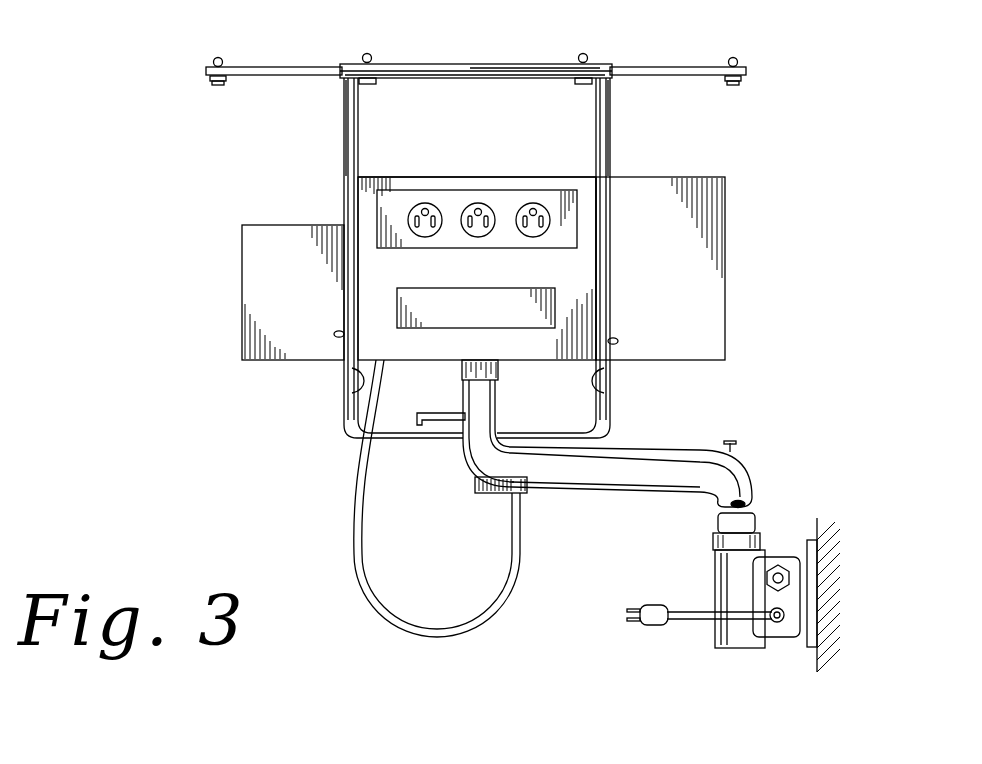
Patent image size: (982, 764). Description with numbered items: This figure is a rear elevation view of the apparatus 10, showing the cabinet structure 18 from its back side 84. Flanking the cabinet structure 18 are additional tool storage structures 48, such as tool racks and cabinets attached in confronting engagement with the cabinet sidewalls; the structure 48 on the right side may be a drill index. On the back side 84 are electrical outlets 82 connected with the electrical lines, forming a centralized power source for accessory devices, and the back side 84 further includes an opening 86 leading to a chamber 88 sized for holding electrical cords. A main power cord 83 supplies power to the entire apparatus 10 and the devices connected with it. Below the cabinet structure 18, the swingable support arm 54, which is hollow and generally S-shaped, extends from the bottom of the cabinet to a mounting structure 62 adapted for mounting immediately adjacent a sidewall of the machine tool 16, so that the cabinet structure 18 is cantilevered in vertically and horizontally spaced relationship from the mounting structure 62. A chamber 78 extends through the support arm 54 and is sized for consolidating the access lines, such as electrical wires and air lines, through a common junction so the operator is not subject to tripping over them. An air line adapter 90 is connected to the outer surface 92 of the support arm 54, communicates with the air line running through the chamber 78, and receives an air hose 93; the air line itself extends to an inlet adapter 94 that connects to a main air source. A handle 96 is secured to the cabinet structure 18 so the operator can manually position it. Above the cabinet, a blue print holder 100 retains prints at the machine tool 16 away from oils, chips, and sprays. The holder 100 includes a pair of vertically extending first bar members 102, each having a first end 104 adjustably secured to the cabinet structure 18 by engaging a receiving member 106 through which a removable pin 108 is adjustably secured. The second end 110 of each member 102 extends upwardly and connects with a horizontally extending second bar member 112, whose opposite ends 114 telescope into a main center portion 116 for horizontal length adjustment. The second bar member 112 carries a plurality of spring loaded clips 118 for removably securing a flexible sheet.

The apparatus 10 is at (727, 137).
The machine tool 16 is at (836, 560).
The cabinet structure 18 is at (366, 212).
The additional tool storage structures 48 is at (262, 268).
The swingable support arm 54 is at (577, 470).
The mounting structure 62 is at (778, 550).
The chamber 78 is at (758, 505).
The electrical outlets 82 is at (526, 204).
The main power cord 83 is at (690, 612).
The back side 84 is at (566, 272).
The opening 86 is at (528, 332).
The chamber 88 is at (524, 310).
The air line adapter 90 is at (504, 492).
The outer surface 92 is at (643, 494).
The air hose 93 is at (440, 628).
The inlet adapter 94 is at (782, 588).
The handle 96 is at (413, 440).
The blue print holder 100 is at (622, 57).
The first bar members 102 is at (344, 123).
The first end 104 is at (346, 424).
The receiving member 106 is at (350, 372).
The removable pin 108 is at (335, 338).
The second end 110 is at (344, 96).
The second bar member 112 is at (497, 64).
The opposite ends 114 is at (281, 66).
The main center portion 116 is at (416, 64).
The spring loaded clips 118 is at (215, 86).